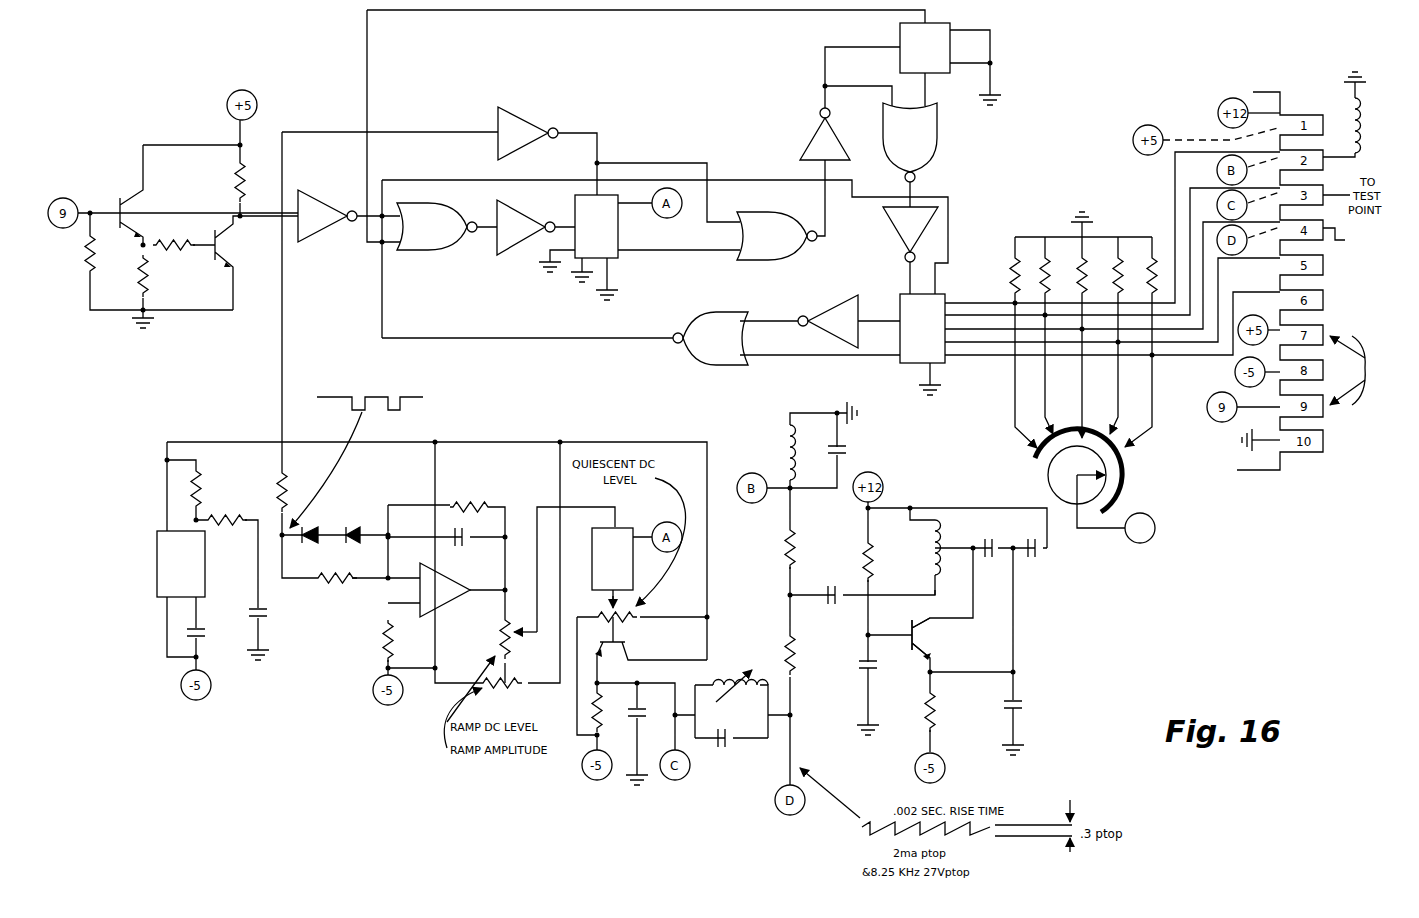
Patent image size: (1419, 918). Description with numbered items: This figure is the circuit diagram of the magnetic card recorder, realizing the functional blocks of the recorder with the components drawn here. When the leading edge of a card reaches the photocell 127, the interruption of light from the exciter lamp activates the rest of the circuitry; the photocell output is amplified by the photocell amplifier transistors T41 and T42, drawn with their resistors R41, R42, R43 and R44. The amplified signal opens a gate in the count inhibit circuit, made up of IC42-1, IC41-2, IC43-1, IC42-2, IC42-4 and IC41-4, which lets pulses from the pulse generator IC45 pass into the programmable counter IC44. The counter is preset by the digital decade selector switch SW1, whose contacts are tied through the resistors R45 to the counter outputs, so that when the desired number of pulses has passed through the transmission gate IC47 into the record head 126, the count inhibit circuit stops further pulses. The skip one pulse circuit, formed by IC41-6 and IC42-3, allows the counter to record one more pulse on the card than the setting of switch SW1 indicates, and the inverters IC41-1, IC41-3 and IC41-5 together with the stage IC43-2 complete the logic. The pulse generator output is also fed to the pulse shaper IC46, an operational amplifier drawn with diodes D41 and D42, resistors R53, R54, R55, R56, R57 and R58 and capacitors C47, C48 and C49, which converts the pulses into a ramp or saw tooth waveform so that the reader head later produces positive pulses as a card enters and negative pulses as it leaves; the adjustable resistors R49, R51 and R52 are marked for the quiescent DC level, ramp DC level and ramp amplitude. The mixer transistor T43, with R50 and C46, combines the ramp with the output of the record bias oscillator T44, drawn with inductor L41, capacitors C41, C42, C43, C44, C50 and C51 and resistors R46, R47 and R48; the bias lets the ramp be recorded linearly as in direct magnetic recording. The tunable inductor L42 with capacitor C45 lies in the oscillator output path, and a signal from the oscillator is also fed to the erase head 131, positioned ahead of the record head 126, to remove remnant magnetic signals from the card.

The erase head 131 is at (1082, 276).
The record head 126 is at (1371, 258).
The photocell 127 is at (1370, 370).
The digital decade selector switch SW1 is at (1087, 423).
The resistor R41 is at (71, 254).
The resistor R42 is at (157, 276).
The resistor R43 is at (174, 237).
The resistor R44 is at (221, 181).
The resistor bank R45 is at (1083, 283).
The resistor R46 is at (854, 558).
The resistor R47 is at (914, 711).
The resistor R48 is at (805, 654).
The potentiometer R49 is at (633, 609).
The resistor R50 is at (693, 629).
The potentiometer R51 is at (496, 638).
The resistor R52 is at (501, 694).
The resistor R53 is at (471, 495).
The resistor R54 is at (372, 641).
The resistor R55 is at (336, 590).
The resistor R56 is at (297, 491).
The resistor R57 is at (226, 532).
The resistor R58 is at (211, 489).
The capacitor C41 is at (980, 542).
The capacitor C42 is at (1022, 542).
The capacitor C43 is at (879, 666).
The capacitor C44 is at (1025, 704).
The capacitor C45 is at (727, 751).
The capacitor C46 is at (642, 716).
The capacitor C47 is at (467, 550).
The capacitor C48 is at (272, 614).
The capacitor C49 is at (211, 637).
The capacitor C50 is at (852, 453).
The capacitor C51 is at (830, 589).
The diode D41 is at (316, 527).
The diode D42 is at (349, 527).
The photocell amplifier transistor T41 is at (134, 195).
The photocell amplifier transistor T42 is at (219, 263).
The mixer transistor T43 is at (651, 662).
The record bias oscillator transistor T44 is at (932, 639).
The inductor L41 is at (922, 557).
The inductor L42 is at (731, 697).
The integrated circuit IC41-1 is at (325, 208).
The integrated circuit IC41-2 is at (524, 220).
The integrated circuit IC41-3 is at (526, 126).
The integrated circuit IC41-4 is at (826, 312).
The integrated circuit IC41-5 is at (903, 234).
The integrated circuit IC41-6 is at (810, 134).
The integrated circuit IC42-1 is at (437, 226).
The integrated circuit IC42-2 is at (777, 236).
The integrated circuit IC42-3 is at (910, 142).
The integrated circuit IC42-4 is at (710, 338).
The integrated circuit IC43-1 is at (596, 226).
The integrated circuit IC43-2 is at (925, 48).
The programmable counter IC44 is at (922, 328).
The pulse generator IC45 is at (181, 564).
The pulse shaper IC46 is at (445, 590).
The transmission gate IC47 is at (612, 559).